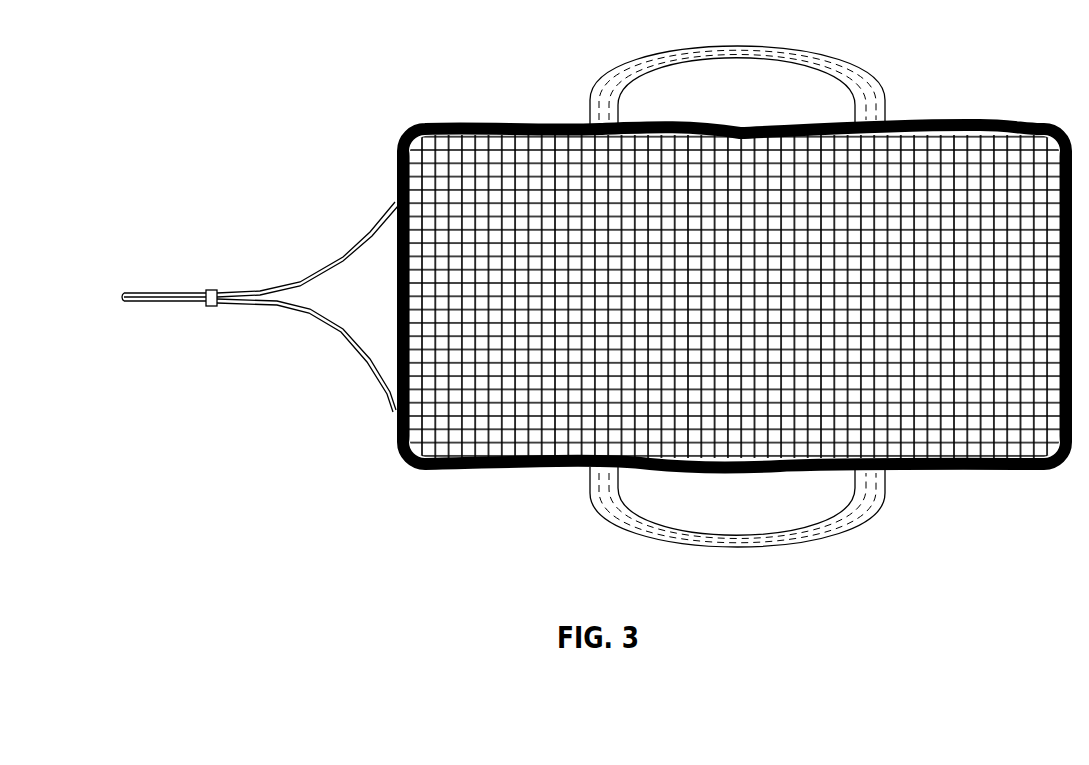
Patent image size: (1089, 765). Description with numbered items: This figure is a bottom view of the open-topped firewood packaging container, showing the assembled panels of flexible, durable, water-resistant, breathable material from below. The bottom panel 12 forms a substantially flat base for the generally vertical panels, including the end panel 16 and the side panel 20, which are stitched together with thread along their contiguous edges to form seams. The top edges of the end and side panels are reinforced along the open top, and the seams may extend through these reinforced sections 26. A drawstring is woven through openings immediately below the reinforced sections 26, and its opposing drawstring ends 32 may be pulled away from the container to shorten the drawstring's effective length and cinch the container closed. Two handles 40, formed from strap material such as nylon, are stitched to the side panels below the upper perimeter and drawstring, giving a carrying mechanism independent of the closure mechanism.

The bottom panel 12 is at (950, 183).
The end panel 16 is at (393, 204).
The side panel 20 is at (553, 468).
The reinforced section 26 is at (209, 307).
The drawstring end 32 is at (148, 304).
The handle 40 is at (677, 533).